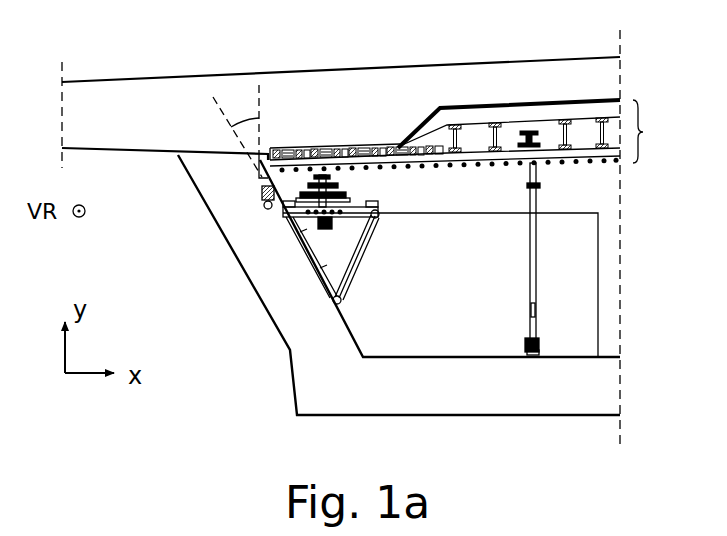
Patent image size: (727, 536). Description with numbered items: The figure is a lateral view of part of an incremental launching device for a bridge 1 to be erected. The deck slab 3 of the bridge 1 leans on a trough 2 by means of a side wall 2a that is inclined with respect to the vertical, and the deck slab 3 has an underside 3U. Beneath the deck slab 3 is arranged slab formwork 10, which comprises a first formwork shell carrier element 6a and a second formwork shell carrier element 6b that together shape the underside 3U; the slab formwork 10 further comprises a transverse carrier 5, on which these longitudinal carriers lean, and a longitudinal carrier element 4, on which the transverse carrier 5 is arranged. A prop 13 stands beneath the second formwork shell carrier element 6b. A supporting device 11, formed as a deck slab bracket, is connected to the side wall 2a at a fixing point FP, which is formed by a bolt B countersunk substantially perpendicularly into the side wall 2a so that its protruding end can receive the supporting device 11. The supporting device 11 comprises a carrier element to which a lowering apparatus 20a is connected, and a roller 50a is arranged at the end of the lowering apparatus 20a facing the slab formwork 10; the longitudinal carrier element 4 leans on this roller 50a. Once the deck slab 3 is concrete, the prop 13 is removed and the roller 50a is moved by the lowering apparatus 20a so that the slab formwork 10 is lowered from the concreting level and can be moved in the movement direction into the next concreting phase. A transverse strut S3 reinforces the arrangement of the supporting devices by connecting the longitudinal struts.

The bridge 1 is at (146, 226).
The trough 2 is at (308, 388).
The side wall 2a is at (350, 327).
The deck slab 3 is at (302, 113).
The underside of the deck slab 3U is at (620, 99).
The longitudinal carrier element 4 is at (335, 180).
The transverse carrier 5 is at (603, 160).
The first formwork shell carrier element 6a is at (363, 147).
The second formwork shell carrier element 6b is at (497, 134).
The slab formwork 10 is at (541, 131).
The supporting device 11 is at (295, 230).
The prop 13 is at (535, 253).
The lowering apparatus 20a is at (293, 253).
The roller 50a is at (338, 198).
The bolt B is at (256, 204).
The fixing point FP is at (256, 192).
The transverse strut S3 is at (362, 247).